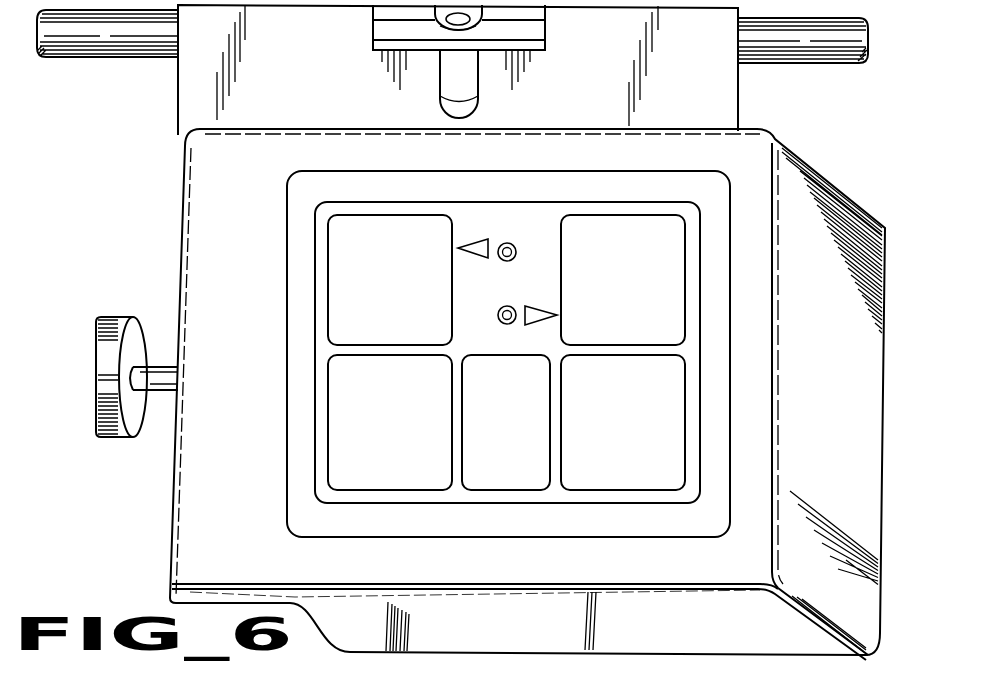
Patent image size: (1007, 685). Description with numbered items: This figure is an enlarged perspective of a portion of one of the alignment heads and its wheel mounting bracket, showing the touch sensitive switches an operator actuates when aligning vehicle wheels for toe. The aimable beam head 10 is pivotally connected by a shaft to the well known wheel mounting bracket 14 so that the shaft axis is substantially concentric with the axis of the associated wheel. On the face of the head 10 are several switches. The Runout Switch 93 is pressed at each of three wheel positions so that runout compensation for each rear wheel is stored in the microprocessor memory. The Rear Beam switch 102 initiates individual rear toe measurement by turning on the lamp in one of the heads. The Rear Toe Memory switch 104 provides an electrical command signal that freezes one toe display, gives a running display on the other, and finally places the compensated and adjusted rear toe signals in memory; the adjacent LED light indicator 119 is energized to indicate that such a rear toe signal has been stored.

The aimable beam head 10 is at (844, 179).
The wheel mounting bracket 14 is at (178, 107).
The Runout Switch 93 is at (405, 334).
The Rear Beam switch 102 is at (480, 476).
The Rear Toe Memory switch 104 is at (603, 336).
The LED light indicator 119 is at (499, 311).